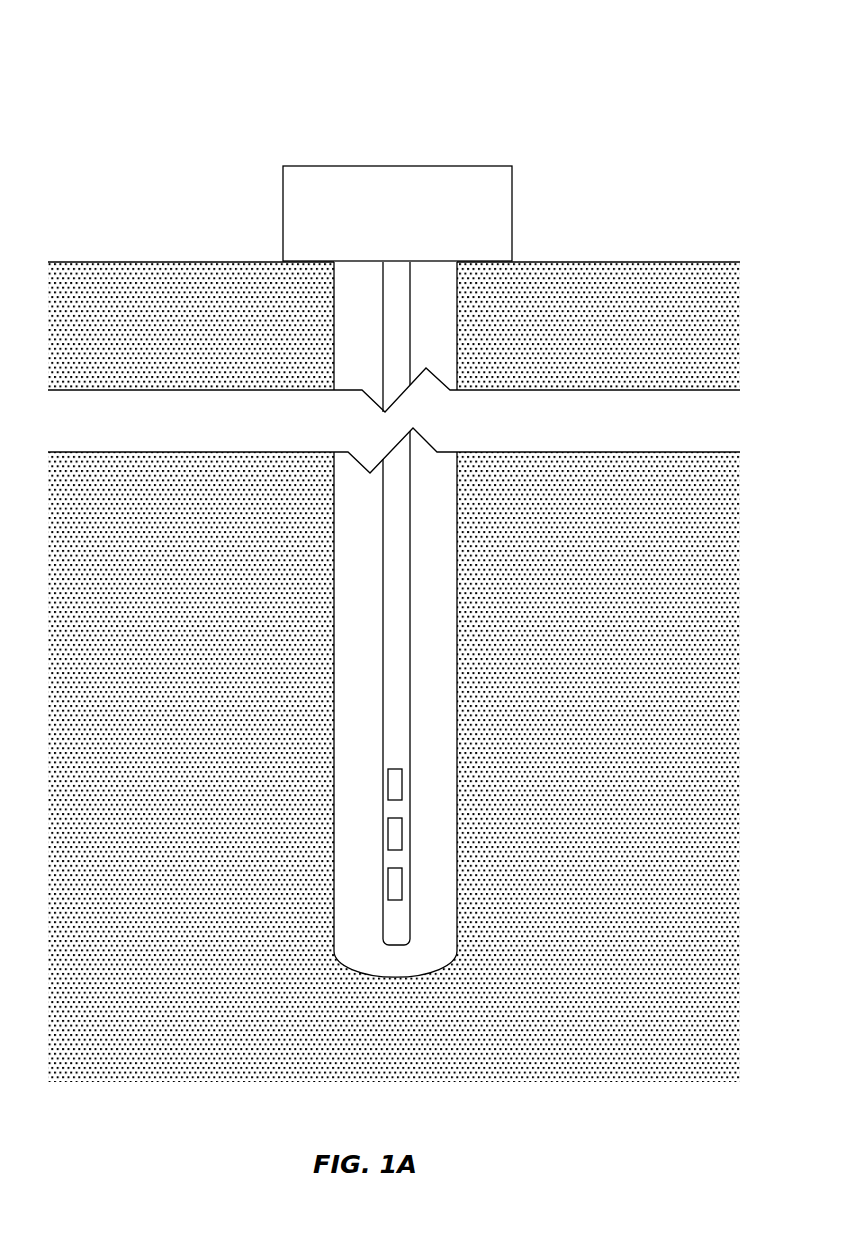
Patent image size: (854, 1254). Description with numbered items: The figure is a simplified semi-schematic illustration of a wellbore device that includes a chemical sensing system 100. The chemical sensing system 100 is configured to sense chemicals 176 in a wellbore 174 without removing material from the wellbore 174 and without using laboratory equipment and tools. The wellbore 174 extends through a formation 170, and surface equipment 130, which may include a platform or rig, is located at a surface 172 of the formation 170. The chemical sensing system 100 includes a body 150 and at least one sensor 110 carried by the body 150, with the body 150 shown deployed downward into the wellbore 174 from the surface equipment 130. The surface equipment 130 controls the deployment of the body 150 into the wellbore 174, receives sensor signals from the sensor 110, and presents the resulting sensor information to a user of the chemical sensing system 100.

The chemical sensing system 100 is at (157, 86).
The sensor 110 is at (402, 874).
The surface equipment 130 is at (334, 166).
The body 150 is at (393, 597).
The formation 170 is at (606, 582).
The surface 172 is at (127, 262).
The wellbore 174 is at (358, 338).
The chemicals 176 is at (376, 659).